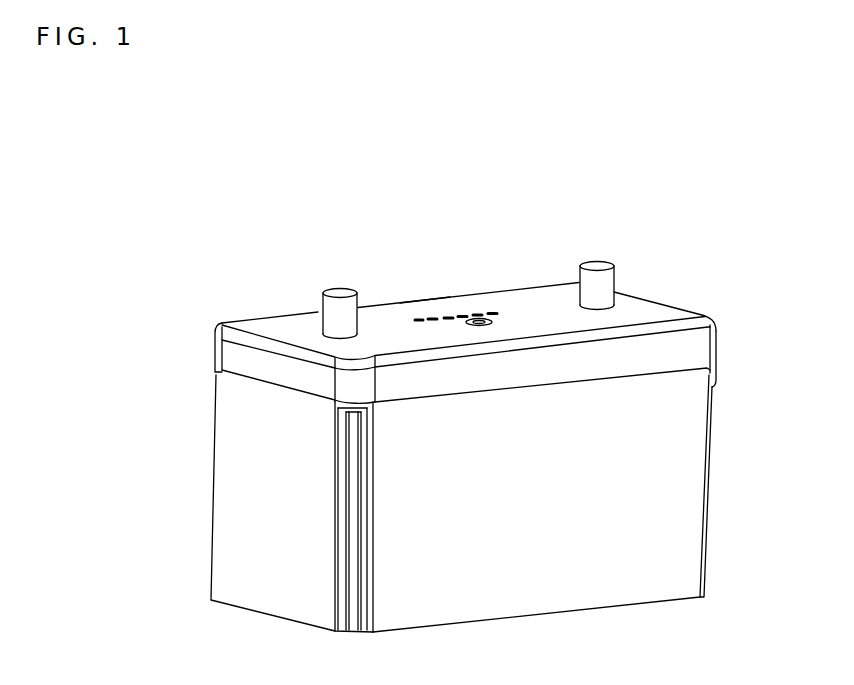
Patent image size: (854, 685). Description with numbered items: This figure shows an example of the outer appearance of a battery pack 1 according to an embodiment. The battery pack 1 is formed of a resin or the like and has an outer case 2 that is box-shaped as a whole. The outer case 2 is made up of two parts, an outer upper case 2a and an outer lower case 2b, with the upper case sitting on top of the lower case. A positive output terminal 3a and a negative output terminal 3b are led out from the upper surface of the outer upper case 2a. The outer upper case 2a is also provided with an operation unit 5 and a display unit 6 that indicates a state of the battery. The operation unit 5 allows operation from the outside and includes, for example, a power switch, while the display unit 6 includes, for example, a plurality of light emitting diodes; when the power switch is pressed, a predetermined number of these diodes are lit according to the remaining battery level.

The battery pack 1 is at (462, 154).
The outer case 2 is at (773, 337).
The outer upper case 2a is at (716, 347).
The outer lower case 2b is at (712, 488).
The positive output terminal 3a is at (339, 290).
The negative output terminal 3b is at (597, 264).
The operation unit 5 is at (494, 322).
The display unit 6 is at (425, 304).